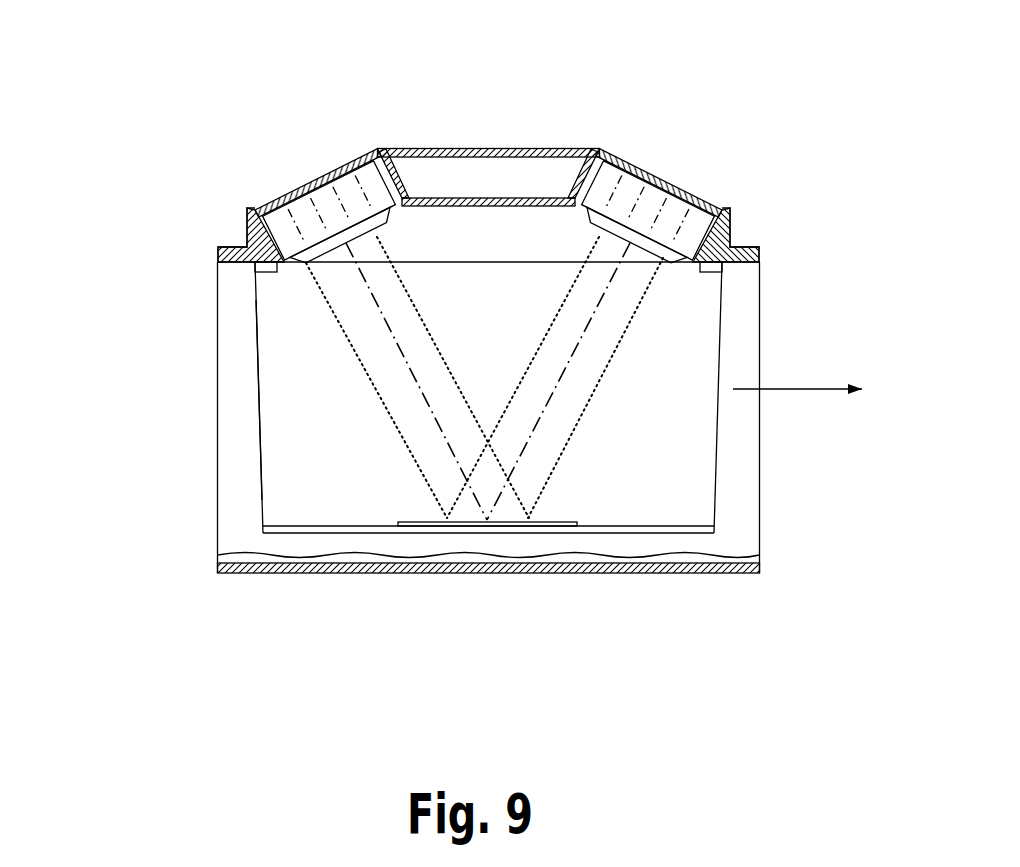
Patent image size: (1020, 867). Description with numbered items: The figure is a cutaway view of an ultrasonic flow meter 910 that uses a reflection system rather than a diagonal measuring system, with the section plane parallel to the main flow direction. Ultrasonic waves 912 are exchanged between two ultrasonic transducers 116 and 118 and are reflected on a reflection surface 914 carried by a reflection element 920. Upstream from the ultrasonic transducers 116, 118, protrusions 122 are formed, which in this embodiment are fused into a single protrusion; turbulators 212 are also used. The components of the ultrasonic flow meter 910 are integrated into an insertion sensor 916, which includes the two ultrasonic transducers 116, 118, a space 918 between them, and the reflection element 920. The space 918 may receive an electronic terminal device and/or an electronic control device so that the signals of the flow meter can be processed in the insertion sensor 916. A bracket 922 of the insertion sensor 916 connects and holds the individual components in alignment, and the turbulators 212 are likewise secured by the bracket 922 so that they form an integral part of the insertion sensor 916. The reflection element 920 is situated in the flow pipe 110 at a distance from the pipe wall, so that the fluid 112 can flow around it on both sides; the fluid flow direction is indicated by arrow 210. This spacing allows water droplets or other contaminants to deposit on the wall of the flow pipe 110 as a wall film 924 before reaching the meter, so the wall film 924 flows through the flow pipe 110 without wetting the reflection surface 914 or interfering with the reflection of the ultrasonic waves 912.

The flow pipe 110 is at (557, 575).
The fluid 112 is at (252, 450).
The ultrasonic transducer 116 is at (347, 200).
The ultrasonic transducer 118 is at (627, 197).
The protrusion 122 is at (448, 230).
The flow direction arrow 210 is at (782, 390).
The turbulator 212 is at (256, 274).
The ultrasonic flow meter 910 is at (582, 126).
The ultrasonic waves 912 is at (561, 411).
The reflection surface 914 is at (545, 519).
The insertion sensor 916 is at (258, 487).
The space 918 is at (520, 177).
The reflection element 920 is at (693, 530).
The bracket 922 is at (257, 380).
The wall film 924 is at (350, 575).